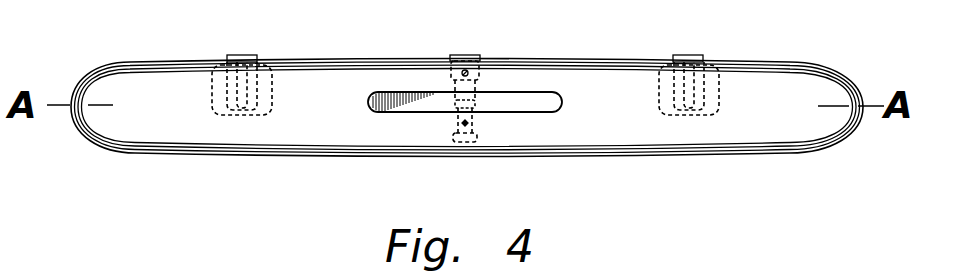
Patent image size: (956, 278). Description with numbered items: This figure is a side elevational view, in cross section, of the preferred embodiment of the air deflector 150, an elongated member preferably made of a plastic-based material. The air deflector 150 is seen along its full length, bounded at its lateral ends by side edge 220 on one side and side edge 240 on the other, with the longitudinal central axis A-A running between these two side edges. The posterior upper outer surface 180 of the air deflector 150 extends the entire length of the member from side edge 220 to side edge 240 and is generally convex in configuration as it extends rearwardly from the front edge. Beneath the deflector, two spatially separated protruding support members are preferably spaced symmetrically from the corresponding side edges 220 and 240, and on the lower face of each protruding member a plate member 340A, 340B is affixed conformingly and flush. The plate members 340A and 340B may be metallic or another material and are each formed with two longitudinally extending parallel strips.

The air deflector 150 is at (362, 58).
The posterior upper outer surface 180 is at (313, 128).
The side edge 220 is at (78, 132).
The side edge 240 is at (853, 132).
The plate member 340A is at (233, 56).
The plate member 340B is at (704, 72).